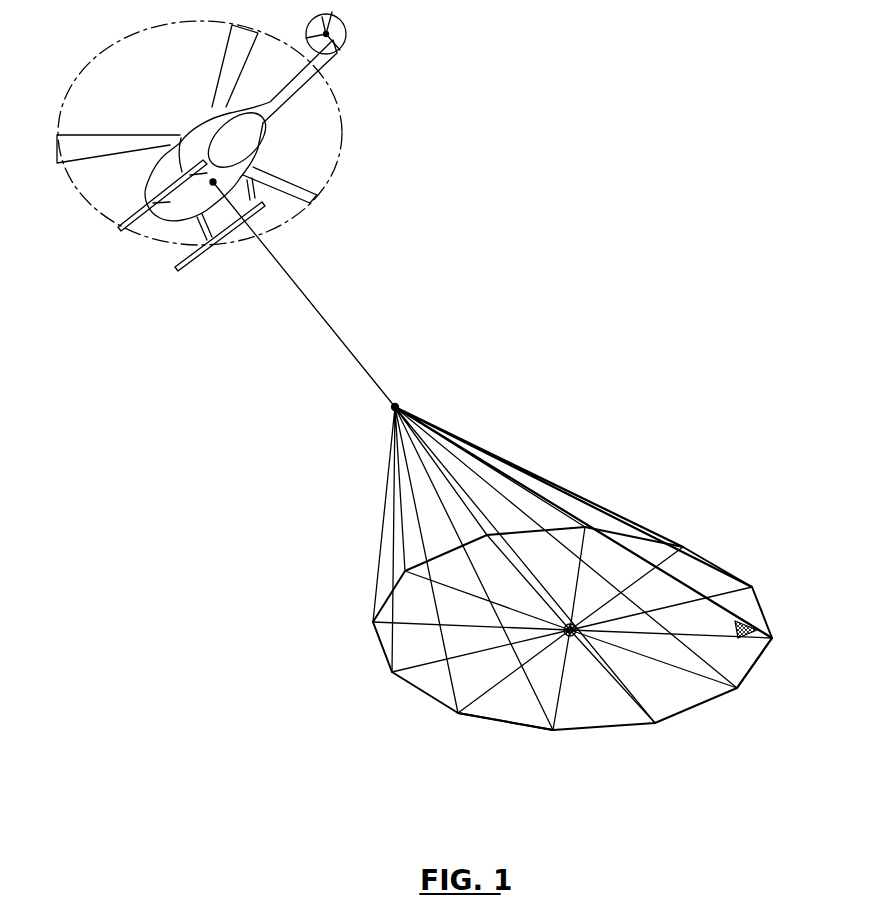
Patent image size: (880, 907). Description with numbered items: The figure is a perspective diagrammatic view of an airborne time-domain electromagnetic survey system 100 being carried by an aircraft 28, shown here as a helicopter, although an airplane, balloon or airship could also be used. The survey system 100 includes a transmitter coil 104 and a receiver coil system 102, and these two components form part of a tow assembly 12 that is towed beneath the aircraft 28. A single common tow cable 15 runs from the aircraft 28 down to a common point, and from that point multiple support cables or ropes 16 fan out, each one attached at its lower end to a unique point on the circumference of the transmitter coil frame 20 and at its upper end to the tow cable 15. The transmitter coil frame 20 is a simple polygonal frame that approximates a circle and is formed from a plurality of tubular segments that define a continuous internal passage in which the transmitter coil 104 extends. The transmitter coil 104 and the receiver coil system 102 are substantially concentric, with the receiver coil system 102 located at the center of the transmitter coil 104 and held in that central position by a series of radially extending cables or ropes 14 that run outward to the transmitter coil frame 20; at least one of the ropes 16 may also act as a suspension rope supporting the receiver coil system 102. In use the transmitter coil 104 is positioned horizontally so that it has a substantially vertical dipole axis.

The airborne TDEM survey system 100 is at (503, 251).
The aircraft 28 is at (352, 127).
The tow cable 15 is at (342, 337).
The tow assembly 12 is at (283, 404).
The support cables or ropes 16 is at (582, 483).
The radially extending cables or ropes 14 is at (731, 592).
The transmitter coil 104 is at (753, 670).
The transmitter coil frame 20 is at (475, 723).
The receiver coil system 102 is at (573, 636).